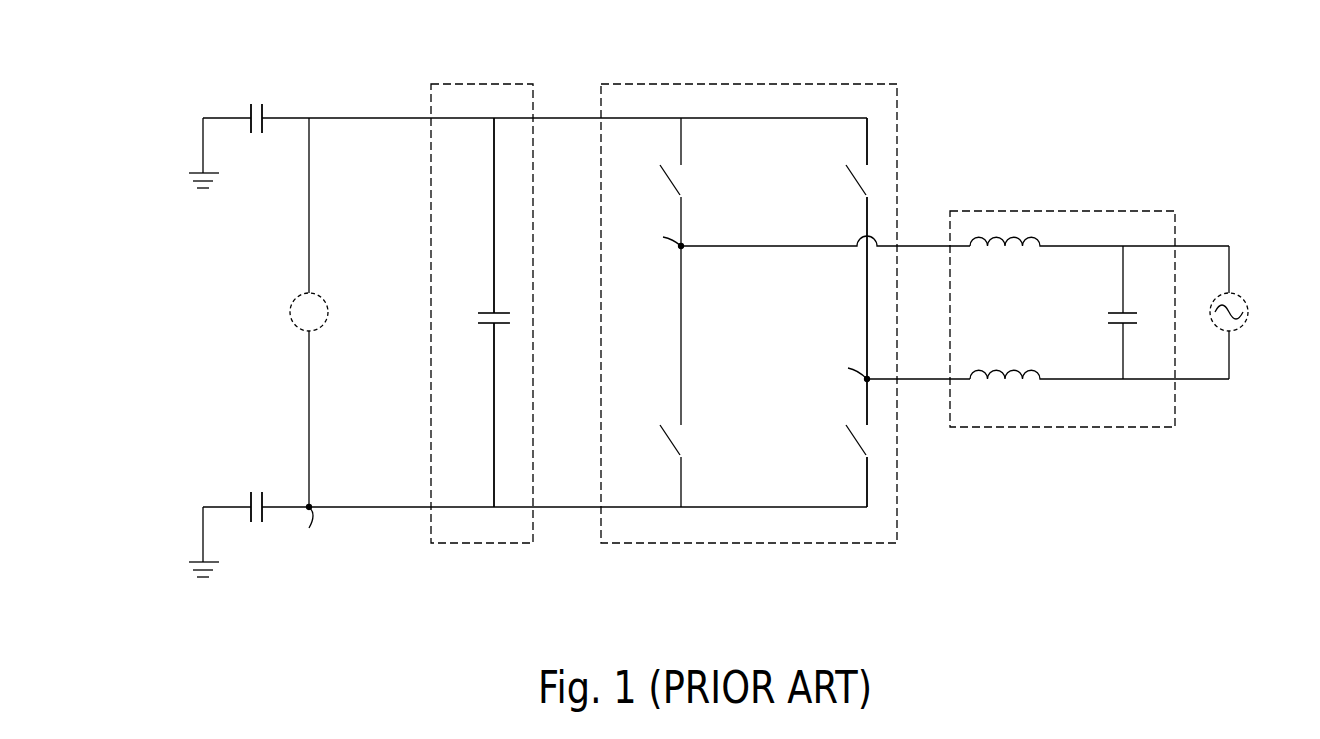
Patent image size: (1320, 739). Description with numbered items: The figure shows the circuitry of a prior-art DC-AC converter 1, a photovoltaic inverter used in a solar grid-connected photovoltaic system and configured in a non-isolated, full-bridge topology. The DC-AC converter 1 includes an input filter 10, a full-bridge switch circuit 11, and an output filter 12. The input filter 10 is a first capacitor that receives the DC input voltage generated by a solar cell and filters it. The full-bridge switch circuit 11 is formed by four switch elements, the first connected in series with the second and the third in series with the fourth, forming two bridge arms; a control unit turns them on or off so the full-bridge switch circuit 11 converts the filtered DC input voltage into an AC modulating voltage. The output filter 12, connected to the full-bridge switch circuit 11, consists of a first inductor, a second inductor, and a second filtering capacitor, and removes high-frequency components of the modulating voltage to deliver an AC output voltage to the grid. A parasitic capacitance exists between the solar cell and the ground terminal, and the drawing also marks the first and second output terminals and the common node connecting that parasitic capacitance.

The DC-AC converter 1 is at (1145, 69).
The input filter 10 is at (482, 84).
The full-bridge switch circuit 11 is at (748, 84).
The output filter 12 is at (1063, 211).